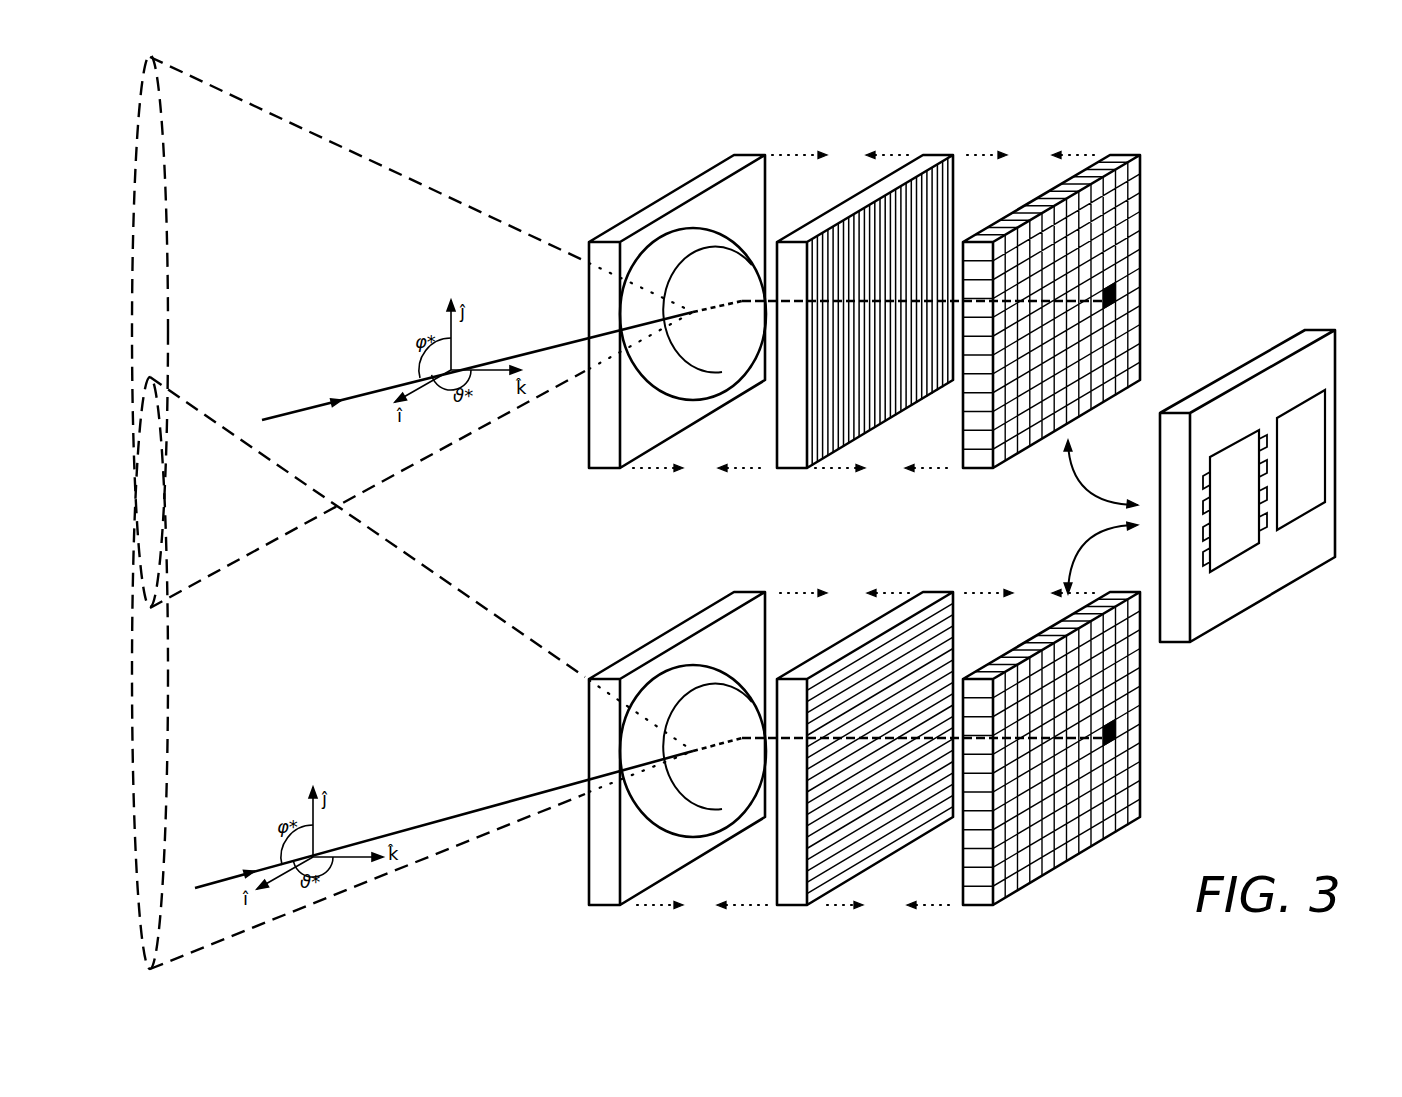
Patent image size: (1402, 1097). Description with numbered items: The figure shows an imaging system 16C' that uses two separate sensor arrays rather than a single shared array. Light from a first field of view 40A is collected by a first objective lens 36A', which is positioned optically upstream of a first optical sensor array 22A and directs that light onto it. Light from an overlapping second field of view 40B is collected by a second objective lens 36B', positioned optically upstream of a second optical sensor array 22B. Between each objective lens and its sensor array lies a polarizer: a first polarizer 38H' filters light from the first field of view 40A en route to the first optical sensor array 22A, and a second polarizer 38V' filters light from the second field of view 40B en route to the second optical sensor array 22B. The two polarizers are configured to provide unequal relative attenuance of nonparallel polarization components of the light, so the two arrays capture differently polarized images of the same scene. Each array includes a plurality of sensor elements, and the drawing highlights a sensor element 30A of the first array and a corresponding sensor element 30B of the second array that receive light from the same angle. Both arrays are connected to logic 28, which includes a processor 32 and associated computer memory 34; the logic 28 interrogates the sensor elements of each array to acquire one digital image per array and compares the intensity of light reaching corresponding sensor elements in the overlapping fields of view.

The imaging system 16C' is at (1193, 368).
The second field of view 40B is at (226, 185).
The first field of view 40A is at (229, 802).
The second objective lens 36B' is at (693, 314).
The first objective lens 36A' is at (693, 751).
The second polarizer 38V' is at (683, 311).
The first polarizer 38H' is at (683, 748).
The second optical sensor array 22B is at (963, 437).
The first optical sensor array 22A is at (963, 875).
The sensor element 30B is at (1117, 292).
The sensor element 30A is at (1117, 728).
The logic 28 is at (1265, 577).
The processor 32 is at (1223, 514).
The computer memory 34 is at (1290, 472).